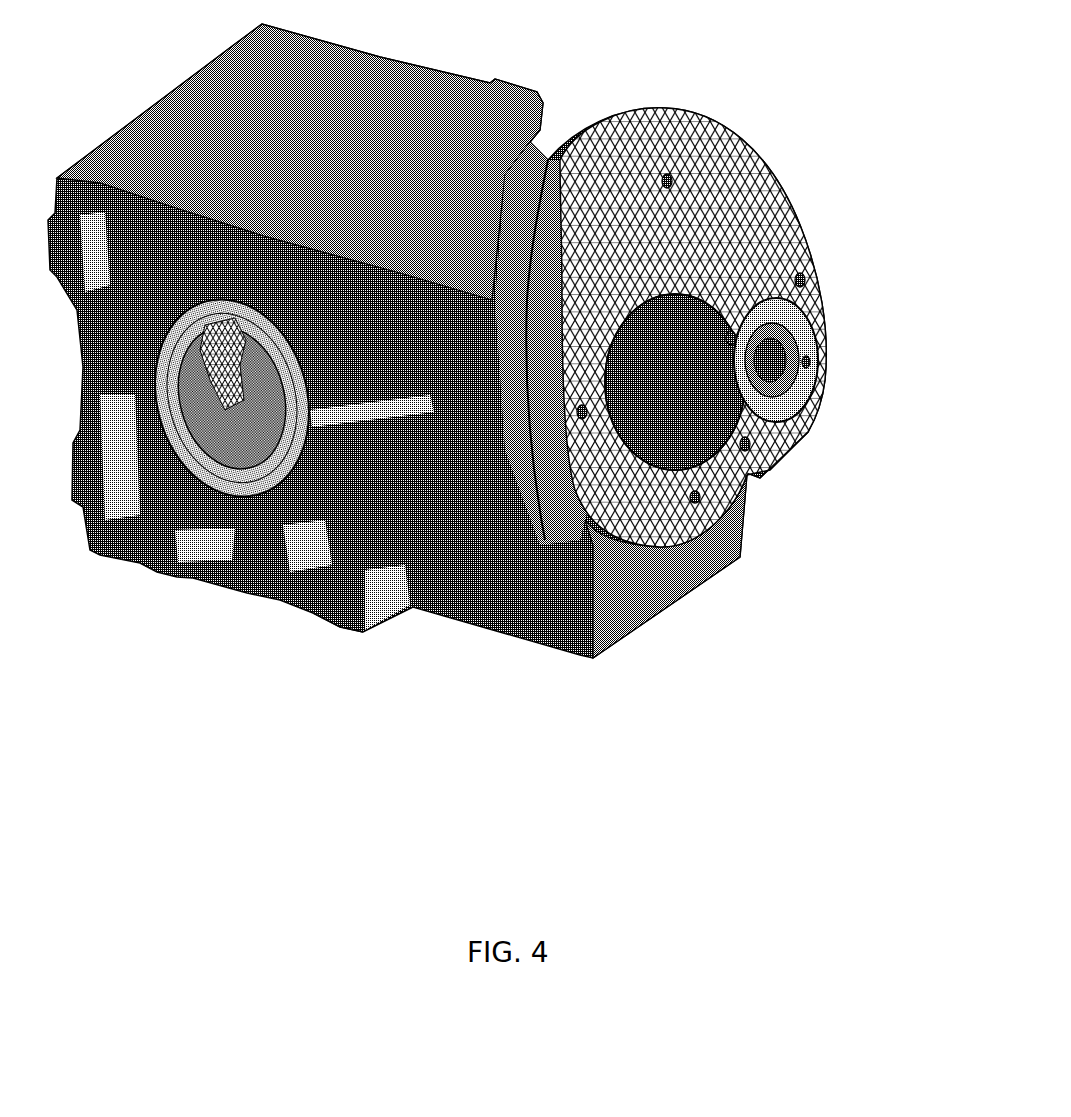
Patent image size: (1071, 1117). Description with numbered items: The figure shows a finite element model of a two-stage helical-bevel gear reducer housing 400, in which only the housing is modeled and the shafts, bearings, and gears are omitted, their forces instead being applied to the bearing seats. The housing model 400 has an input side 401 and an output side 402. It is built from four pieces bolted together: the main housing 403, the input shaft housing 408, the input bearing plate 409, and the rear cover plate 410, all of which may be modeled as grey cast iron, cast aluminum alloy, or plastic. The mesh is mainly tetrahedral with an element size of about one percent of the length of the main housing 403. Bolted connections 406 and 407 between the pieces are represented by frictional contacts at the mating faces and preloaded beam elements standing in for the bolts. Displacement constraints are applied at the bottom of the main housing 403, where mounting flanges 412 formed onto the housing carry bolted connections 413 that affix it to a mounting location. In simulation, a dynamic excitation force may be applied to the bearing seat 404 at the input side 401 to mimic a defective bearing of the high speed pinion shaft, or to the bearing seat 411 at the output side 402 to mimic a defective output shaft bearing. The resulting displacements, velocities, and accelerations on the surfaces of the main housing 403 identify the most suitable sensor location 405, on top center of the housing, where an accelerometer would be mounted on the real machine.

The gear reducer housing model 400 is at (497, 703).
The input side 401 is at (843, 313).
The output side 402 is at (183, 485).
The main housing 403 is at (203, 113).
The bearing seat 404 is at (808, 400).
The sensor location 405 is at (327, 130).
The bolted connections 406 is at (667, 187).
The bolted connections 407 is at (797, 290).
The input shaft housing 408 is at (760, 167).
The input bearing plate 409 is at (767, 274).
The rear cover plate 410 is at (433, 339).
The bearing seat 411 is at (248, 578).
The mounting flanges 412 is at (203, 548).
The bolted connections 413 is at (342, 598).